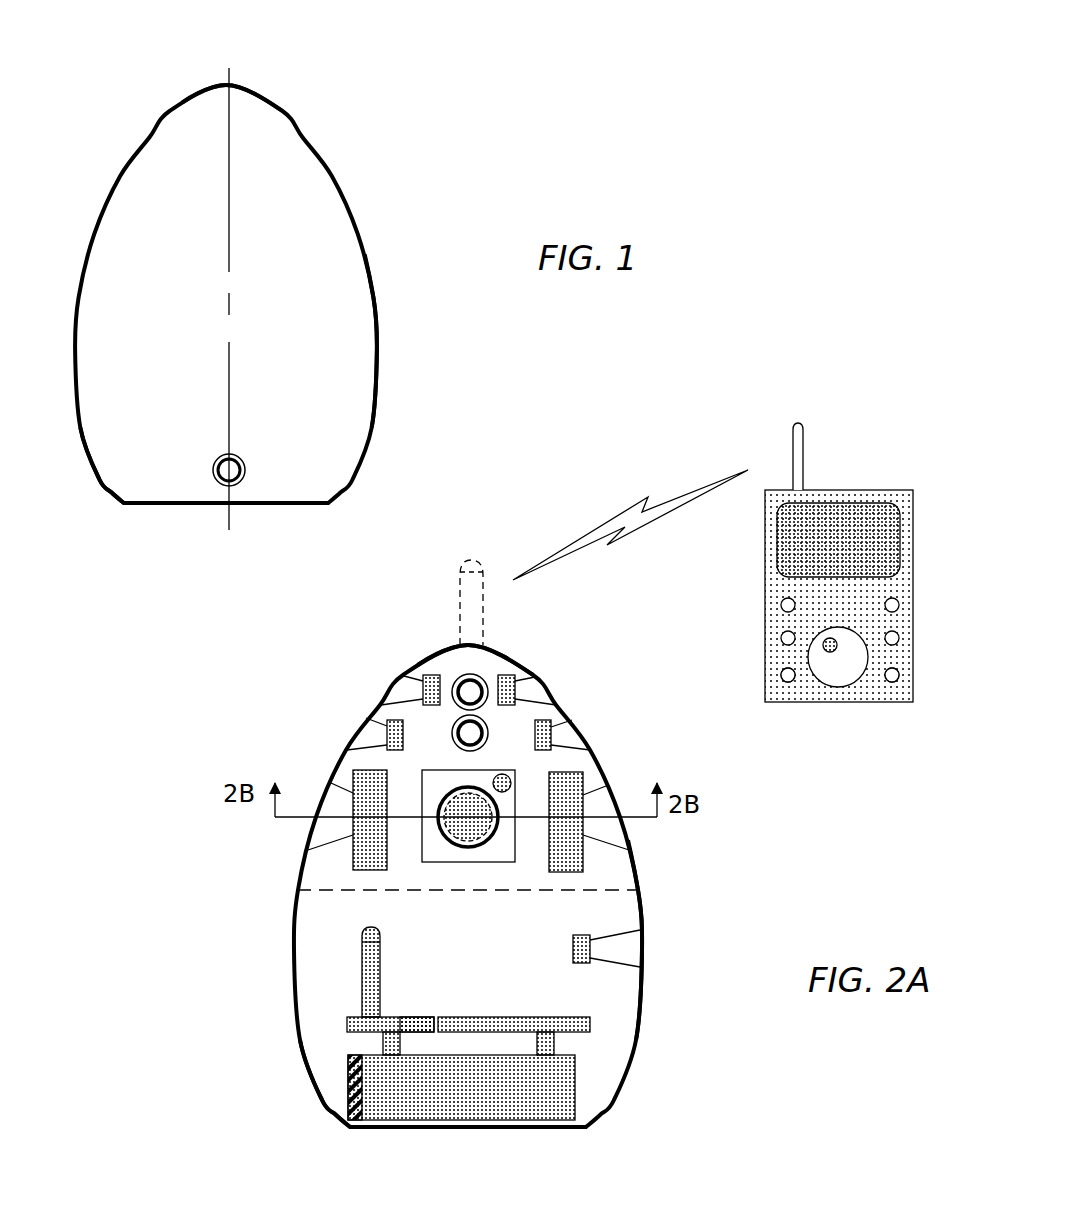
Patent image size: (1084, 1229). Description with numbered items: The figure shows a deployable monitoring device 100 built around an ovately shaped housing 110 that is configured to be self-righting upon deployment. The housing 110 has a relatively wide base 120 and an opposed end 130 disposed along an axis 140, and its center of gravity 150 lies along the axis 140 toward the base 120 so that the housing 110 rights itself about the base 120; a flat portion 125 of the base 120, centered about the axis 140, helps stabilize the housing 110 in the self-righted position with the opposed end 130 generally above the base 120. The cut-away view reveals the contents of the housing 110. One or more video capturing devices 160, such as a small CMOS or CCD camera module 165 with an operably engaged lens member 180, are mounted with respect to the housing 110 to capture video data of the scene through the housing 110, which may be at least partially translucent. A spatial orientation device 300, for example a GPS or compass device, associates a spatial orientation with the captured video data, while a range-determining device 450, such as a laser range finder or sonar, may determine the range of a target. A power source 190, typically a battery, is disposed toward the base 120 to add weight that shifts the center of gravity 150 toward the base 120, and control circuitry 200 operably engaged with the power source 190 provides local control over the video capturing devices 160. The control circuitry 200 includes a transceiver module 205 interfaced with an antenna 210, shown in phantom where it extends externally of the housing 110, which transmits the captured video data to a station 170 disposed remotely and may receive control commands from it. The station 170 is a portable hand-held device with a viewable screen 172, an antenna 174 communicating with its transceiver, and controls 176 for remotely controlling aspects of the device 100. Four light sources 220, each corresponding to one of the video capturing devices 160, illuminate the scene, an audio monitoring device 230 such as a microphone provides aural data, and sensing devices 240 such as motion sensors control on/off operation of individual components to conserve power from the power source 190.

In FIG. 1, the deployable monitoring device 100 is at (360, 212).
In FIG. 2A, the deployable monitoring device 100 is at (672, 882).
In FIG. 1, the housing 110 is at (377, 384).
In FIG. 2A, the housing 110 is at (640, 921).
In FIG. 1, the base 120 is at (99, 500).
In FIG. 2A, the base 120 is at (312, 1115).
In FIG. 1, the flat portion 125 is at (277, 511).
In FIG. 2A, the flat portion 125 is at (543, 1133).
In FIG. 1, the opposed end 130 is at (266, 95).
In FIG. 2A, the opposed end 130 is at (503, 648).
In FIG. 1, the axis 140 is at (233, 392).
In FIG. 1, the center of gravity 150 is at (245, 465).
In FIG. 2A, the video capturing device 160 is at (467, 867).
In FIG. 2A, the camera module 165 is at (421, 848).
In FIG. 2A, the station 170 is at (843, 487).
In FIG. 2A, the viewable screen 172 is at (811, 552).
In FIG. 2A, the antenna 174 is at (803, 445).
In FIG. 2A, the controls 176 is at (890, 687).
In FIG. 2A, the lens member 180 is at (585, 795).
In FIG. 2A, the power source 190 is at (450, 1100).
In FIG. 2A, the control circuitry 200 is at (591, 1022).
In FIG. 2A, the transceiver module 205 is at (414, 1017).
In FIG. 2A, the antenna 210 is at (459, 607).
In FIG. 2A, the light source 220 is at (389, 721).
In FIG. 2A, the audio monitoring device 230 is at (581, 964).
In FIG. 2A, the sensing device 240 is at (507, 674).
In FIG. 2A, the spatial orientation device 300 is at (347, 1080).
In FIG. 2A, the range-determining device 450 is at (511, 781).